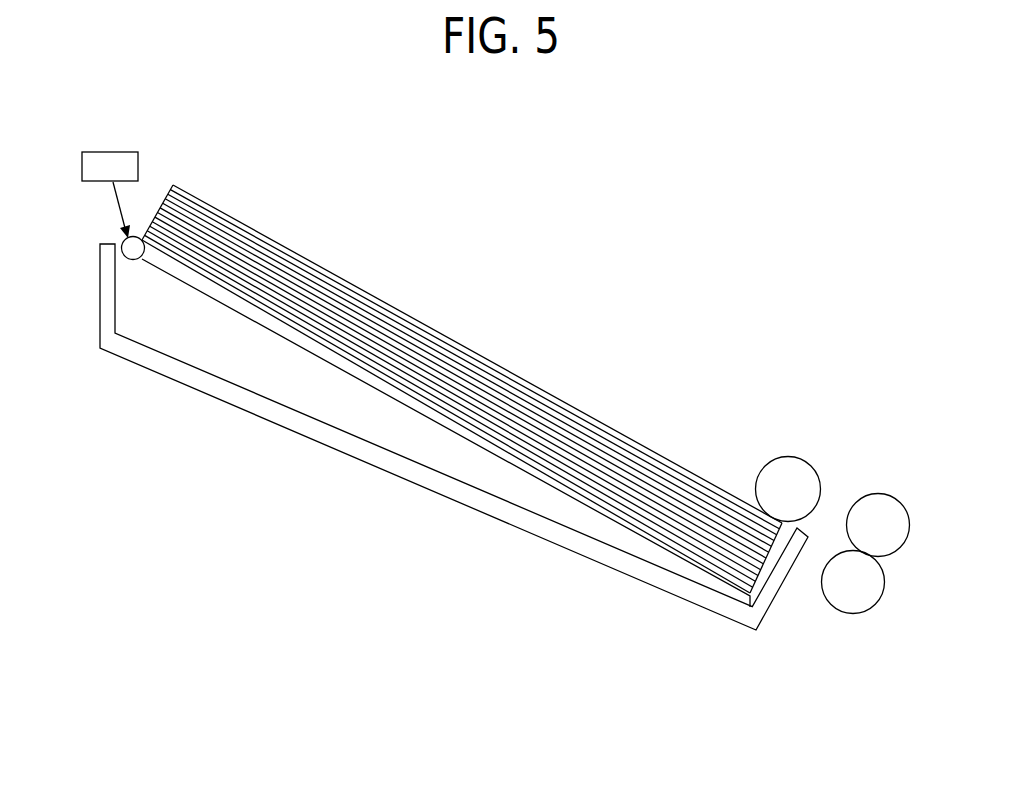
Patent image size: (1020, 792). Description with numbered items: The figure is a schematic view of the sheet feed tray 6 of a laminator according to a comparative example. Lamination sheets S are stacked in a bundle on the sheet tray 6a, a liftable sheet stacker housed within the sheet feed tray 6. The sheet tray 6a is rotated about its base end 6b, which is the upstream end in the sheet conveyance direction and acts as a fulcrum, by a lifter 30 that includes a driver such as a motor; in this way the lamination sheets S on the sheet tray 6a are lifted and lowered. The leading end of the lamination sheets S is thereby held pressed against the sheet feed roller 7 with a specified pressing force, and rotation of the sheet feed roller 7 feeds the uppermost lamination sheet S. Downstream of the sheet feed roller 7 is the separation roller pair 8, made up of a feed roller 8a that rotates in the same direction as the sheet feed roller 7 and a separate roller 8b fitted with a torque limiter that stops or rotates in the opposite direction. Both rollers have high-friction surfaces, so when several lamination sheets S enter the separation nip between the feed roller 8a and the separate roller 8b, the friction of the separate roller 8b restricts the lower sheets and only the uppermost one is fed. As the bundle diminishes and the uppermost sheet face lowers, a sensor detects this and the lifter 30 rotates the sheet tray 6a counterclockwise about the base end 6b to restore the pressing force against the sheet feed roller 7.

The lifter 30 is at (113, 151).
The base end 6b is at (118, 240).
The sheet feed tray 6 is at (338, 450).
The sheet tray 6a is at (285, 338).
The lamination sheet S is at (408, 311).
The sheet feed roller 7 is at (789, 456).
The separation roller pair 8 is at (876, 557).
The feed roller 8a is at (879, 493).
The separate roller 8b is at (851, 615).